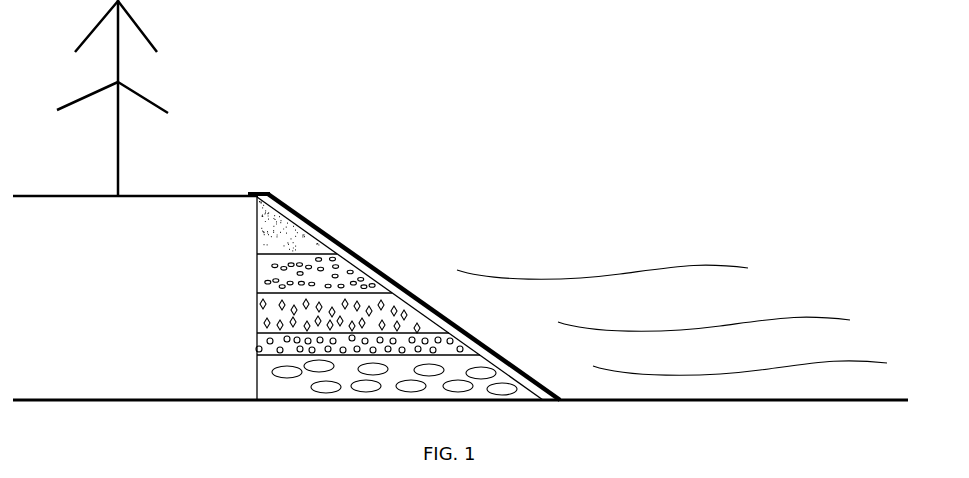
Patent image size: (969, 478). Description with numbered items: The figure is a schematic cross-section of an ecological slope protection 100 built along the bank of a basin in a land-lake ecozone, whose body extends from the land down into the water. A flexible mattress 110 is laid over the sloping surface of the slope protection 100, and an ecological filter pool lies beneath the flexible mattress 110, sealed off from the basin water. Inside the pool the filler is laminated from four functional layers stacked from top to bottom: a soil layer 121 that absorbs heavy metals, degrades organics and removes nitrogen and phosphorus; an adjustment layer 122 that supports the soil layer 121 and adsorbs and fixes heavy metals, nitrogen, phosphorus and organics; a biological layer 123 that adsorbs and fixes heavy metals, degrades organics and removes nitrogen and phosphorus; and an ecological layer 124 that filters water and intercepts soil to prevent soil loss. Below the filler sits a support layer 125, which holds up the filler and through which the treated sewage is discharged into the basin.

The ecological slope protection 100 is at (383, 260).
The flexible mattress 110 is at (285, 205).
The soil layer 121 is at (280, 237).
The adjustment layer 122 is at (262, 271).
The biological layer 123 is at (263, 316).
The ecological layer 124 is at (260, 343).
The support layer 125 is at (267, 377).